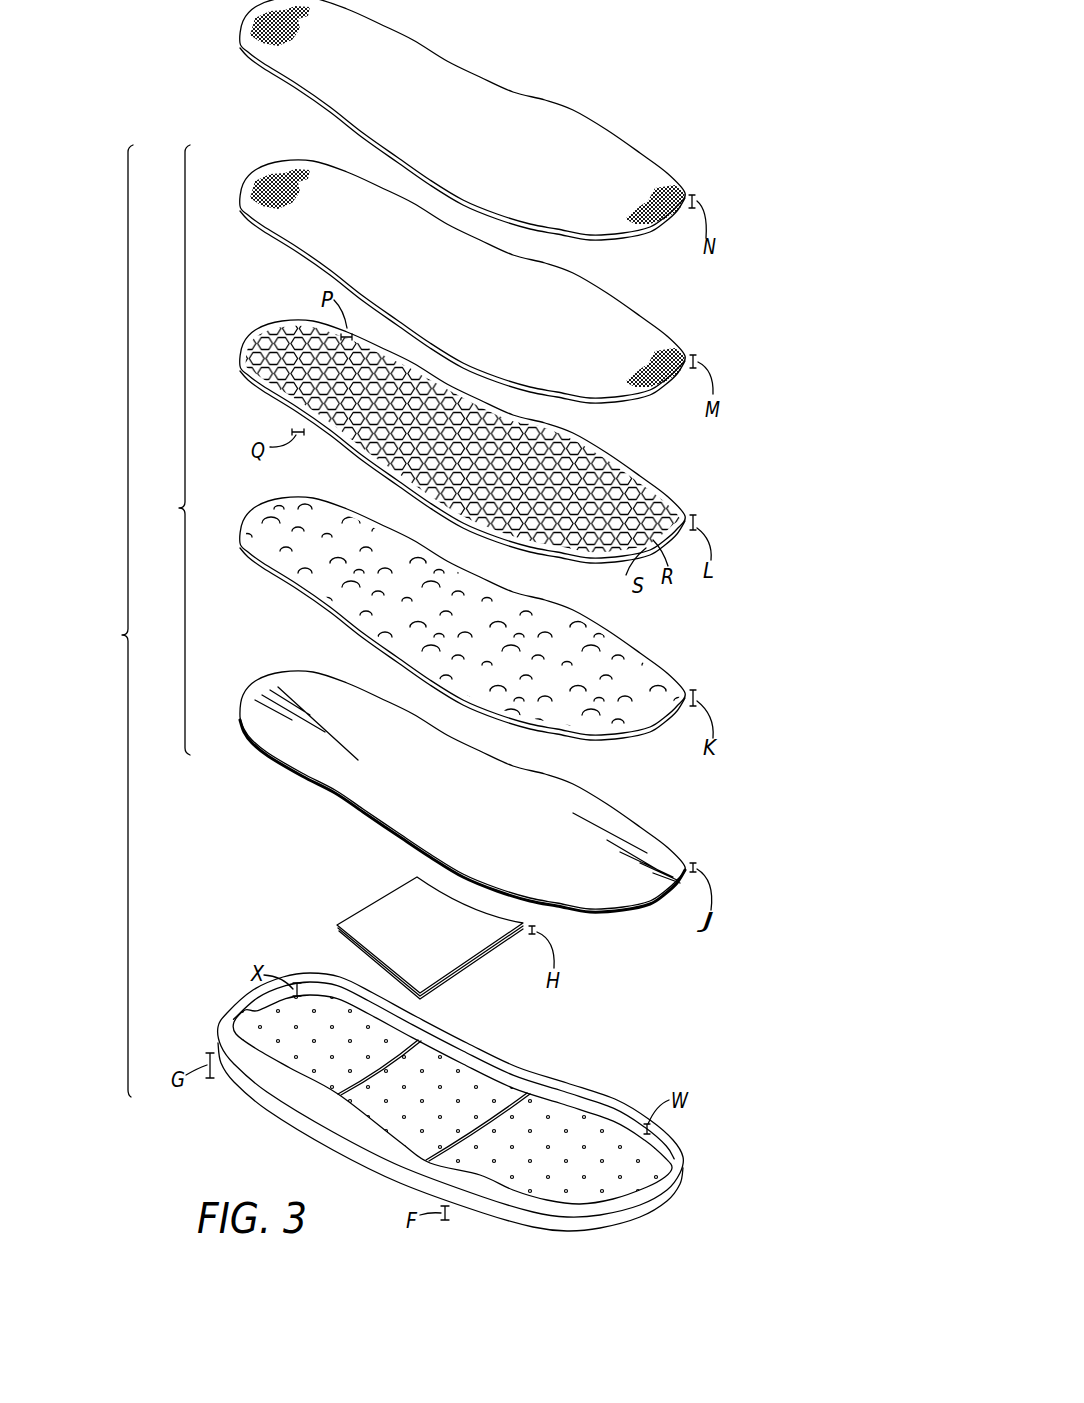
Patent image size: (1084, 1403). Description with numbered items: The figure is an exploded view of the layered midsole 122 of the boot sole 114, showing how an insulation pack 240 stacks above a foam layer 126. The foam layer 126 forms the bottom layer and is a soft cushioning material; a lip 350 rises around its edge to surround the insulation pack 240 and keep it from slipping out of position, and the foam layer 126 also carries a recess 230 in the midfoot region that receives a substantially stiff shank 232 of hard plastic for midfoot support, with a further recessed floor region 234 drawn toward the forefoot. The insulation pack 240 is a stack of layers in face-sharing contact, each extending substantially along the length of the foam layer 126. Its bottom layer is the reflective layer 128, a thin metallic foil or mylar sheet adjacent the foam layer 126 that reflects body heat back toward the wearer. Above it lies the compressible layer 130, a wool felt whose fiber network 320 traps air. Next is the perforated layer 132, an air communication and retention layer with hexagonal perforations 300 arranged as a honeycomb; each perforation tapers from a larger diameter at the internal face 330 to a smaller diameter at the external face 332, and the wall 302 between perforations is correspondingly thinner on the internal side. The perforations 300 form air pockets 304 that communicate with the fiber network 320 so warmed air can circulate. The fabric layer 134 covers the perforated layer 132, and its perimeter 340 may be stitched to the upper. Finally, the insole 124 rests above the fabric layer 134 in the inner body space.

The sole 114 is at (676, 75).
The midsole 122 is at (108, 621).
The insulation pack 240 is at (164, 450).
The insole 124 is at (597, 214).
The fabric layer 134 is at (643, 393).
The perimeter of the fabric layer 340 is at (635, 326).
The perforated layer 132 is at (581, 553).
The internal face of the perforated layer 330 is at (294, 337).
The external face of the perforated layer 332 is at (268, 404).
The perforations 300 is at (663, 497).
The wall 302 is at (609, 541).
The air pockets 304 is at (505, 518).
The compressible layer 130 is at (465, 640).
The fiber network 320 is at (463, 635).
The reflective layer 128 is at (614, 894).
The shank 232 is at (468, 952).
The foam layer 126 is at (485, 1102).
The lip 350 is at (683, 1162).
The recess 230 is at (498, 1097).
The forefoot recess of outsole 234 is at (588, 1147).